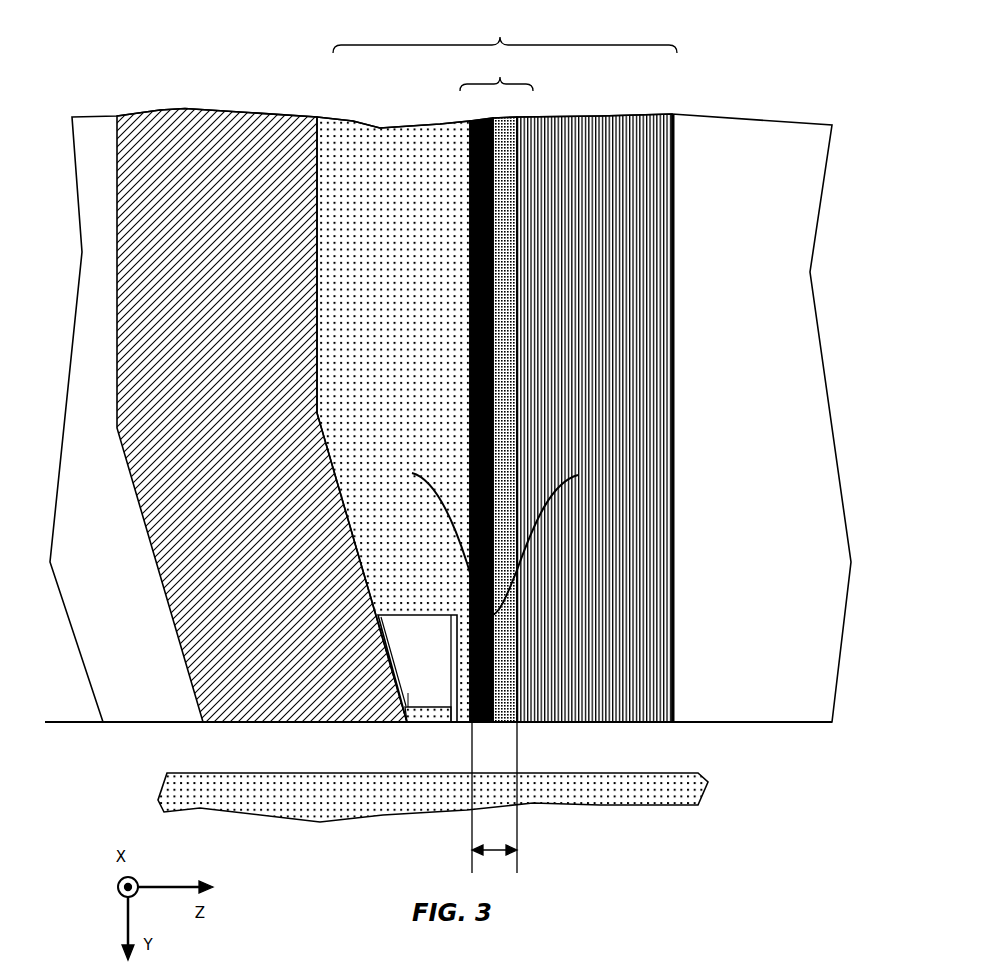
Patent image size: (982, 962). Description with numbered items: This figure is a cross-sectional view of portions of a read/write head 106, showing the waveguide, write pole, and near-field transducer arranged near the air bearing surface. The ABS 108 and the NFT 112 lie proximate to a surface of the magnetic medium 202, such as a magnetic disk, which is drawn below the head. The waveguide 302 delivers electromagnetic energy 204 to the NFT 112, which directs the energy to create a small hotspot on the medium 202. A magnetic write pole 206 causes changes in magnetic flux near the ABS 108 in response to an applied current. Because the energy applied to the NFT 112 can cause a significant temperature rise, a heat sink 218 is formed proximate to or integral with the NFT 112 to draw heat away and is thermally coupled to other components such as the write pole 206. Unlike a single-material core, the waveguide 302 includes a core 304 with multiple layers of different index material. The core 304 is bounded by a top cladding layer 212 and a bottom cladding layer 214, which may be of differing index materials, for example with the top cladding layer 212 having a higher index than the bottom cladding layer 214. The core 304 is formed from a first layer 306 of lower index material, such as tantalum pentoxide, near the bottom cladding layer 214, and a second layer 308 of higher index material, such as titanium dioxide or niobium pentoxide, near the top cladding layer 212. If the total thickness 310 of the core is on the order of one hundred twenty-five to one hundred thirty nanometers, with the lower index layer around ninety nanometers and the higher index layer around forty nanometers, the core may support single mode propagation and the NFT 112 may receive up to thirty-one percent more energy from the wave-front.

The read/write head 106 is at (738, 57).
The ABS 108 is at (68, 724).
The NFT 112 is at (451, 723).
The magnetic medium 202 is at (220, 793).
The electromagnetic energy 204 is at (543, 493).
The magnetic write pole 206 is at (237, 112).
The top cladding layer 212 is at (410, 125).
The bottom cladding layer 214 is at (583, 118).
The heat sink 218 is at (405, 723).
The waveguide 302 is at (505, 32).
The core 304 is at (496, 71).
The first layer 306 is at (503, 117).
The second layer 308 is at (476, 120).
The thickness 310 is at (494, 800).